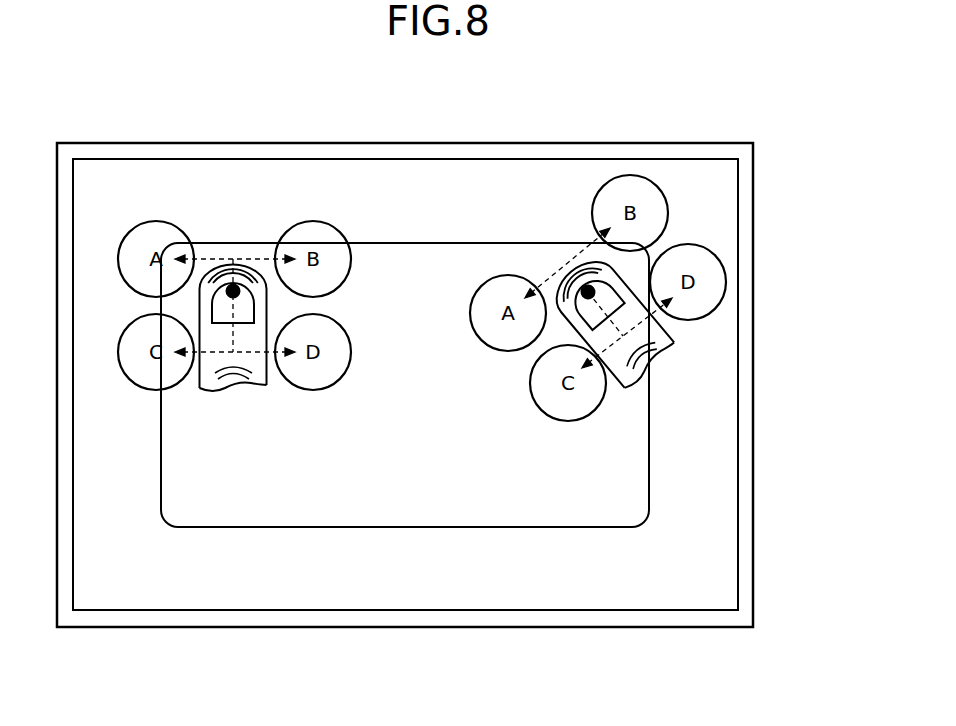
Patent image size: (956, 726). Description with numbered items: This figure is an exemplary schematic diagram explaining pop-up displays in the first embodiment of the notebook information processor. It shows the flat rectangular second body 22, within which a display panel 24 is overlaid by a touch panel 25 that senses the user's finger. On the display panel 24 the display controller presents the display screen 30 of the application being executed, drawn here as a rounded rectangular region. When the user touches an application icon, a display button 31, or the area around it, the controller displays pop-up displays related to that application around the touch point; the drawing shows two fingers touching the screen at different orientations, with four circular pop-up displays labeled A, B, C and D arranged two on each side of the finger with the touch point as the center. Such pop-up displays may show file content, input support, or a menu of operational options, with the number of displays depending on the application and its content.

The second body 22 is at (755, 158).
The display panel 24 is at (405, 356).
The touch panel 25 is at (405, 356).
The display screen 30 is at (487, 385).
The display button 31 is at (238, 262).